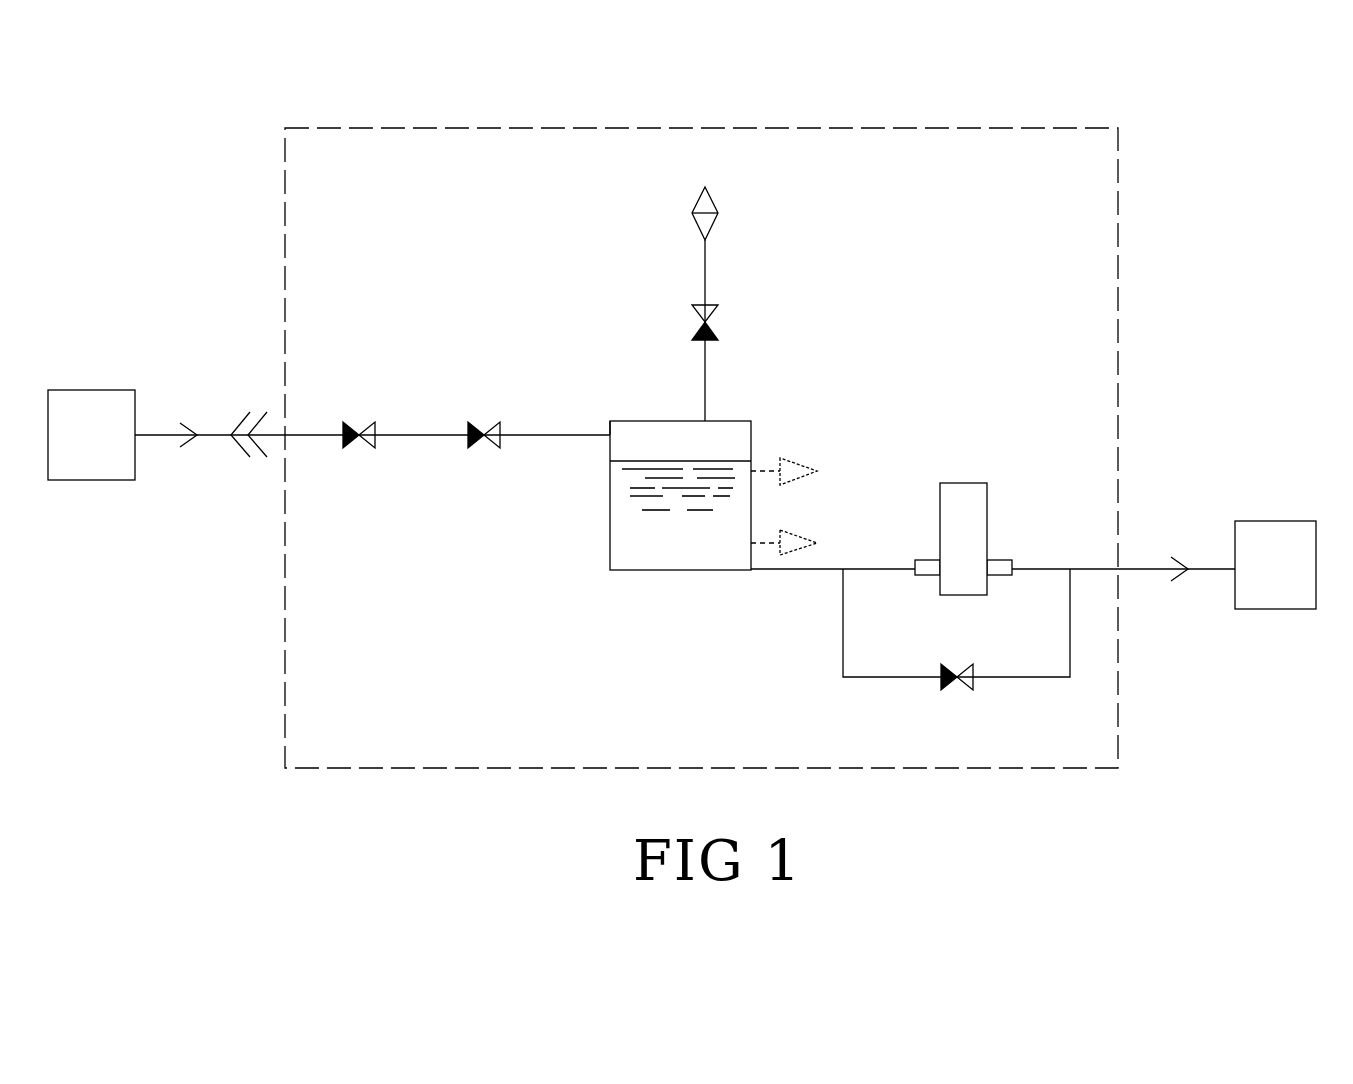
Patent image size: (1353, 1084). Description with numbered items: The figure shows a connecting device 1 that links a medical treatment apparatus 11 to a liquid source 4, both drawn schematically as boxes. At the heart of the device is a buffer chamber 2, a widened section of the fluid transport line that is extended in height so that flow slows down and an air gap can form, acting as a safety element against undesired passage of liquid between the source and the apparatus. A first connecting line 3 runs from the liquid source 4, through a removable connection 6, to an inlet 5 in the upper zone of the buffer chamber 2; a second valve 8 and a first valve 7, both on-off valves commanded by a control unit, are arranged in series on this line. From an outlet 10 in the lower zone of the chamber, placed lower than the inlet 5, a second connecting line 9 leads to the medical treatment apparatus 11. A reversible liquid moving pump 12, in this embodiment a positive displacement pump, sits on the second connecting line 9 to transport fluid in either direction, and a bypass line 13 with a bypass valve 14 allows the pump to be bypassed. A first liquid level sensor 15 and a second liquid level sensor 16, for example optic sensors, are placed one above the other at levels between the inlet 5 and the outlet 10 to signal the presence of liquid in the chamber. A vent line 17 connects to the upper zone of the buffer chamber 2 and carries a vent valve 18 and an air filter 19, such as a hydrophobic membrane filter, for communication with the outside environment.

The connecting device 1 is at (1118, 255).
The buffer chamber 2 is at (610, 525).
The first connecting line 3 is at (427, 430).
The liquid source 4 is at (91, 435).
The inlet 5 is at (610, 428).
The removable connection 6 is at (250, 382).
The first valve 7 is at (477, 446).
The second valve 8 is at (352, 446).
The second connecting line 9 is at (1052, 569).
The outlet 10 is at (752, 572).
The medical treatment apparatus 11 is at (1275, 565).
The liquid moving pump 12 is at (962, 483).
The bypass line 13 is at (857, 677).
The bypass valve 14 is at (957, 680).
The first liquid level sensor 15 is at (800, 462).
The second liquid level sensor 16 is at (800, 534).
The vent line 17 is at (705, 273).
The vent valve 18 is at (708, 320).
The air filter 19 is at (700, 200).